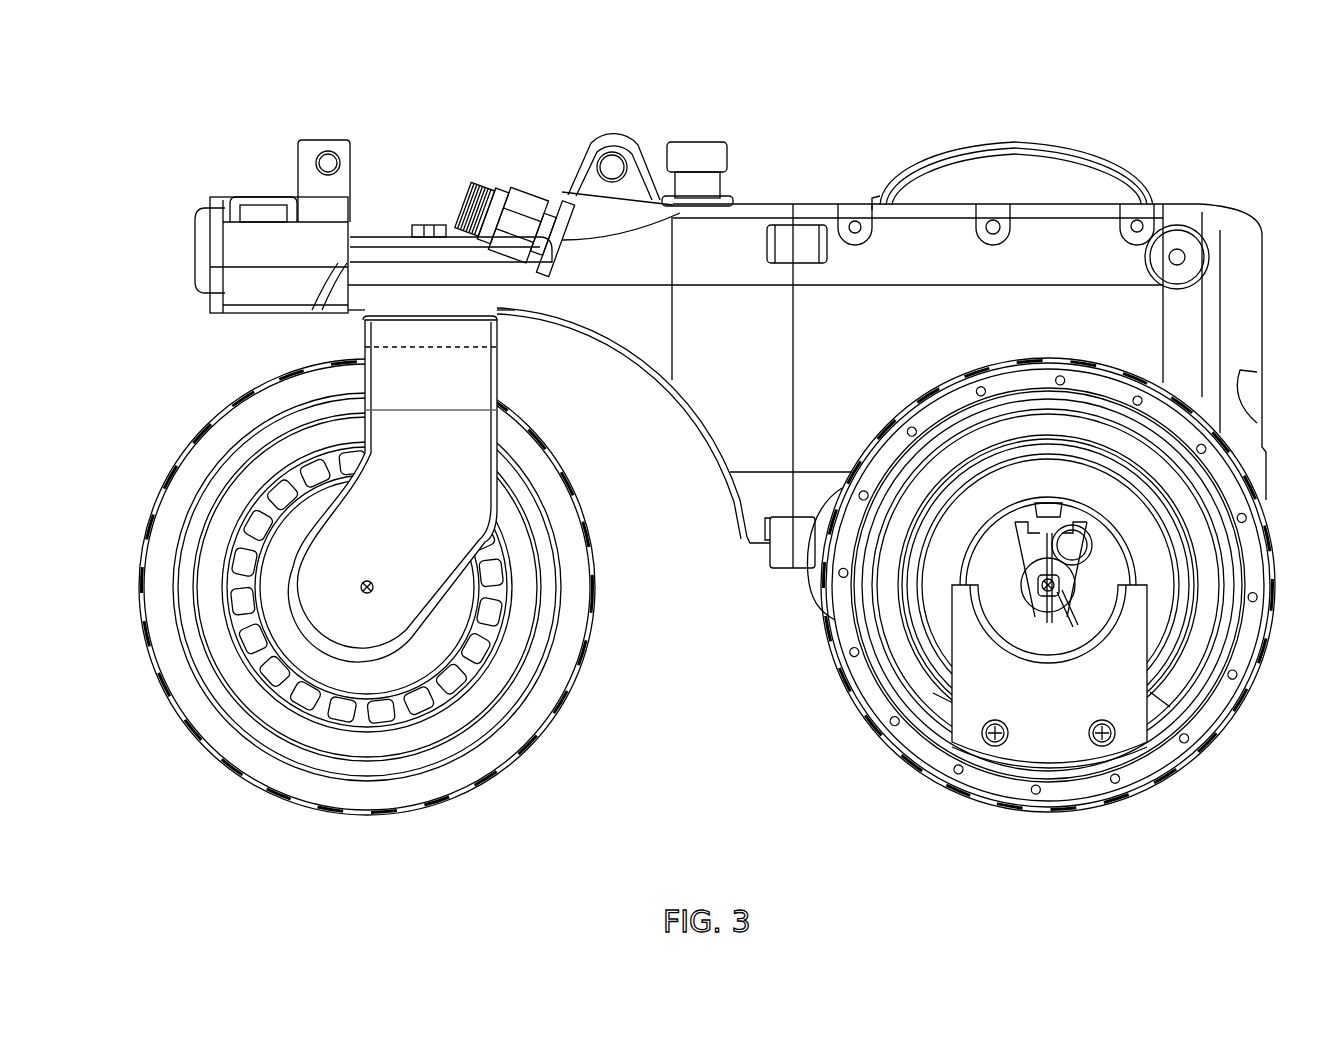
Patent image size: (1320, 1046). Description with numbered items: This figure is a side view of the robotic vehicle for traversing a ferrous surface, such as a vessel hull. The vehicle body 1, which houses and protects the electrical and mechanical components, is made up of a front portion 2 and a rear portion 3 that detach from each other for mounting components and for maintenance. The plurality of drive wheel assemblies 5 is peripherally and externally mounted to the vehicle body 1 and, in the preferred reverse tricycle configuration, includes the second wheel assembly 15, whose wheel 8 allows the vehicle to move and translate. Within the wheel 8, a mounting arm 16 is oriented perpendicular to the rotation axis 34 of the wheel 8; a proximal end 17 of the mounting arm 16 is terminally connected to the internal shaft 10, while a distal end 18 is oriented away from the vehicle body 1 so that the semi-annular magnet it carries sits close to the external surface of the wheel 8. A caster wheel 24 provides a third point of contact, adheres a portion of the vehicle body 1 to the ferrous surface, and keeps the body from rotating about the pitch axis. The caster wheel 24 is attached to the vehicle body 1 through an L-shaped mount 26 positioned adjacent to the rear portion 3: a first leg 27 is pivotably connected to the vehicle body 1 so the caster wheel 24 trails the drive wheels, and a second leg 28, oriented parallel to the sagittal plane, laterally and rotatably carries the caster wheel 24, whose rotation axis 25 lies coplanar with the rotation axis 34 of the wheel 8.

The vehicle body 1 is at (720, 108).
The front portion 2 is at (1032, 335).
The rear portion 3 is at (631, 320).
The drive wheel assemblies 5 is at (1048, 614).
The wheel 8 is at (1228, 698).
The internal shaft 10 is at (1043, 580).
The second wheel assembly 15 is at (1155, 860).
The mounting arm 16 is at (1064, 725).
The proximal end 17 is at (1040, 550).
The distal end 18 is at (1046, 783).
The caster wheel 24 is at (552, 822).
The rotation axis 25 is at (373, 587).
The L-shaped mount 26 is at (525, 387).
The first leg 27 is at (378, 331).
The second leg 28 is at (430, 500).
The rotation axis 34 is at (1062, 598).